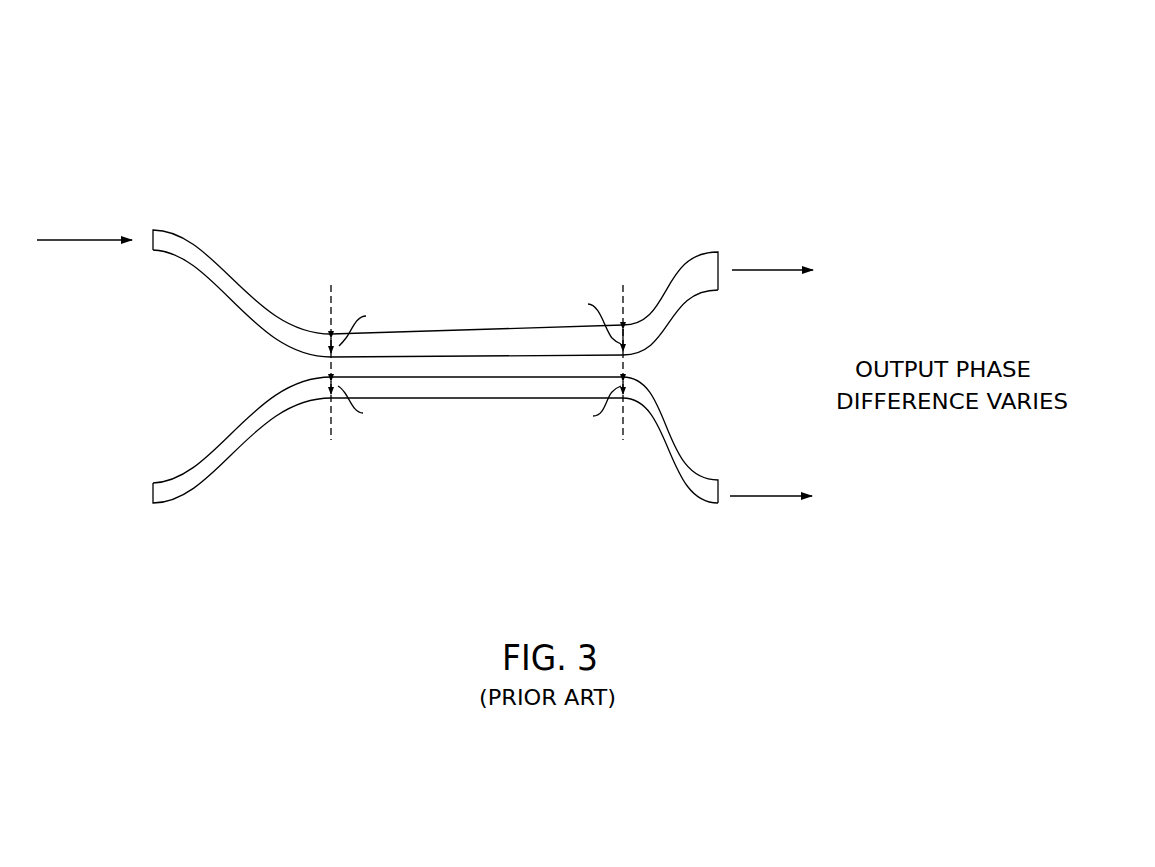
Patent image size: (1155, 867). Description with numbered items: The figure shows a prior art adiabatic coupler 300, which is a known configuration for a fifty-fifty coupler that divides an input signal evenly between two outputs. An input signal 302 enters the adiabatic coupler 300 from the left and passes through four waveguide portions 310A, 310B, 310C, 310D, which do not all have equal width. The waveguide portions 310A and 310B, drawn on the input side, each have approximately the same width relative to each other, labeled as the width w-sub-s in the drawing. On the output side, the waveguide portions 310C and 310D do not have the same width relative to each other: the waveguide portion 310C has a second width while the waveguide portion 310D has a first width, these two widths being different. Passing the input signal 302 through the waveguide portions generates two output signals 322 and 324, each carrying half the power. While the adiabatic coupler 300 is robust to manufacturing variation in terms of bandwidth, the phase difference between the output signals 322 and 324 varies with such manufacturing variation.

The adiabatic coupler 300 is at (96, 74).
The input signal 302 is at (84, 202).
The waveguide portion 310A is at (341, 414).
The waveguide portion 310B is at (341, 327).
The waveguide portion 310C is at (613, 420).
The waveguide portion 310D is at (614, 325).
The output signal 322 is at (912, 350).
The output signal 324 is at (900, 422).